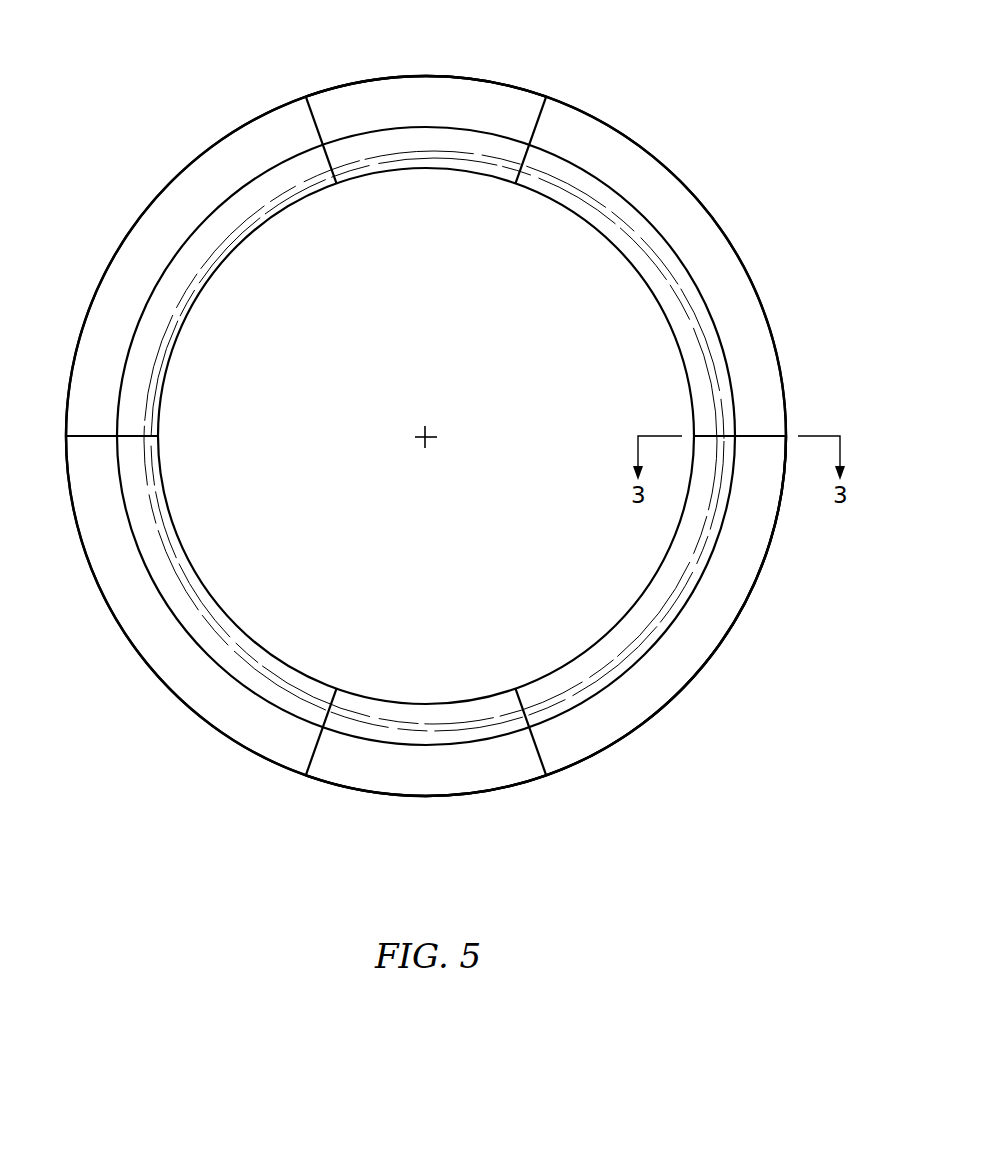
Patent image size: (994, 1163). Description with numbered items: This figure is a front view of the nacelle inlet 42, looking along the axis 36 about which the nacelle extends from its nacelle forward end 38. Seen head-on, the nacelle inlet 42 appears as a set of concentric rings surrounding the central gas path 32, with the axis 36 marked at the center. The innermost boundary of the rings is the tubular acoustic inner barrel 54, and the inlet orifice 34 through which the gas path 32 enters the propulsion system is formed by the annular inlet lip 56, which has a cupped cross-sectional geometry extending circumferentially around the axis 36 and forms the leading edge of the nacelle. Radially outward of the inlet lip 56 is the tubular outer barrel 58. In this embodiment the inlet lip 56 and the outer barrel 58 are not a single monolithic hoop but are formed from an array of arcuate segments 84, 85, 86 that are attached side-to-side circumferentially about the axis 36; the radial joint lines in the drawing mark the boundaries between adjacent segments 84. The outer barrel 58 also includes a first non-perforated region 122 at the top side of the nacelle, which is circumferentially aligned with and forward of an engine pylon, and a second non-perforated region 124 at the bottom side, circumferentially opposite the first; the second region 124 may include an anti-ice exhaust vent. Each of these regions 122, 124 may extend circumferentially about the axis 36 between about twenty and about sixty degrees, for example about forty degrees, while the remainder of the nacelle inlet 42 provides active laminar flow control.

The gas path 32 is at (433, 571).
The inlet orifice 34 is at (180, 655).
The axis 36 is at (421, 440).
The nacelle forward end 38 is at (243, 692).
The nacelle inlet 42 is at (668, 80).
The acoustic inner barrel 54 is at (592, 632).
The inlet lip 56 is at (675, 692).
The outer barrel 58 is at (735, 650).
The arcuate segment 84 is at (730, 248).
The arcuate segment 85 is at (487, 100).
The arcuate segment 86 is at (430, 783).
The first non-perforated region 122 is at (400, 95).
The second non-perforated region 124 is at (508, 782).